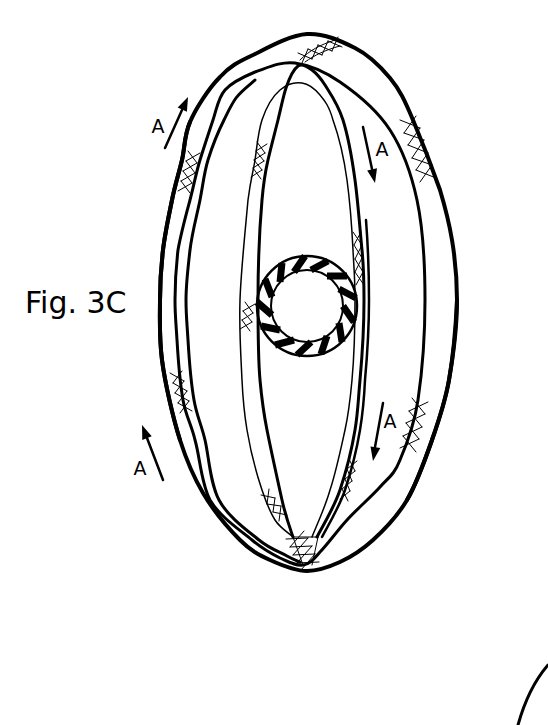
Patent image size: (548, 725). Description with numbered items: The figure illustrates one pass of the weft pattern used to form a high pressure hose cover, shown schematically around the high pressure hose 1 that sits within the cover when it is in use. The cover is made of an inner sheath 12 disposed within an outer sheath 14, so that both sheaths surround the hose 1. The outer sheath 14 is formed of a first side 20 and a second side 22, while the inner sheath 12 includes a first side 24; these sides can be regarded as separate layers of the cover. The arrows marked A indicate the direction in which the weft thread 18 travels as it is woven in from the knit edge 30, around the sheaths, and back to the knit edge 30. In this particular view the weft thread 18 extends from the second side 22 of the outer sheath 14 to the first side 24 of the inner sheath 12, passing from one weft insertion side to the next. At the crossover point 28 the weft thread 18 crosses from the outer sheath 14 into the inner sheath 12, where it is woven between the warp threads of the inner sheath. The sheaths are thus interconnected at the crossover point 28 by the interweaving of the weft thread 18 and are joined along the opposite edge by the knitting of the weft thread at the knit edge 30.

The high pressure hose 1 is at (295, 262).
The inner sheath 12 is at (240, 252).
The outer sheath 14 is at (390, 78).
The weft thread 18 is at (225, 90).
The first side of the outer sheath 20 is at (453, 350).
The second side of the outer sheath 22 is at (154, 230).
The first side of the inner sheath 24 is at (370, 237).
The crossover point 28 is at (318, 42).
The knit edge 30 is at (307, 590).